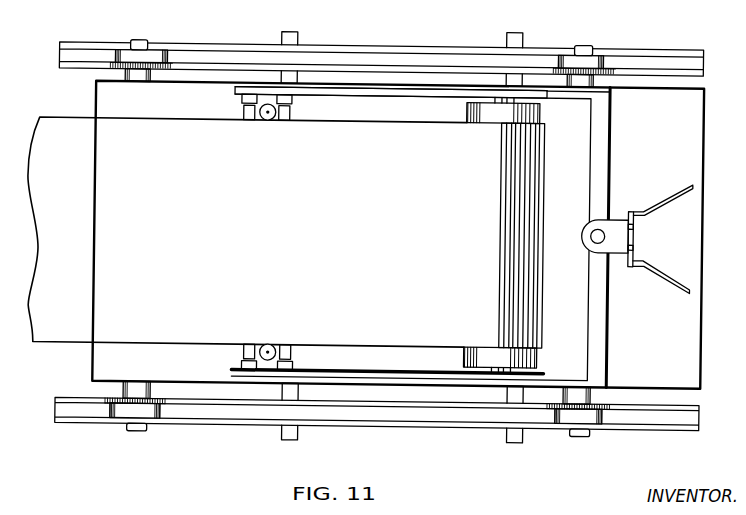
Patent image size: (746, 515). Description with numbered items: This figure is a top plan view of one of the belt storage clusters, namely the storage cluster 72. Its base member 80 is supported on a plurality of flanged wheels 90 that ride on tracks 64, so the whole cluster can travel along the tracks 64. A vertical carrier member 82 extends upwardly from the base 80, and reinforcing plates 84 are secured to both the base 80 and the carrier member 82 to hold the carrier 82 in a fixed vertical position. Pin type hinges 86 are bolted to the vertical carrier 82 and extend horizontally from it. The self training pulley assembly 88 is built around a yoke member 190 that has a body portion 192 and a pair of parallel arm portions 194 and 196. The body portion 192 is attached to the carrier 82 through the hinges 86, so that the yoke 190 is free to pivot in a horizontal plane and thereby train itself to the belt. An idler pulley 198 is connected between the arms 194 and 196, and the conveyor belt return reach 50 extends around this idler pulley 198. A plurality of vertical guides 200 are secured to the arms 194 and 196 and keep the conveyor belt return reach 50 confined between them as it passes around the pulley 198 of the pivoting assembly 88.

The conveyor belt return reach 50 is at (185, 246).
The tracks 64 is at (698, 56).
The storage cluster 72 is at (397, 233).
The base member 80 is at (659, 120).
The vertical carrier member 82 is at (636, 208).
The reinforcing plates 84 is at (681, 193).
The pin type hinges 86 is at (585, 230).
The self training pulley assemblies 88 is at (375, 93).
The flanged wheels 90 is at (160, 53).
The yoke member 190 is at (619, 347).
The body portion 192 is at (590, 339).
The arm portion 194 is at (430, 91).
The arm portion 196 is at (381, 372).
The idler pulley 198 is at (495, 108).
The vertical guides 200 is at (266, 120).